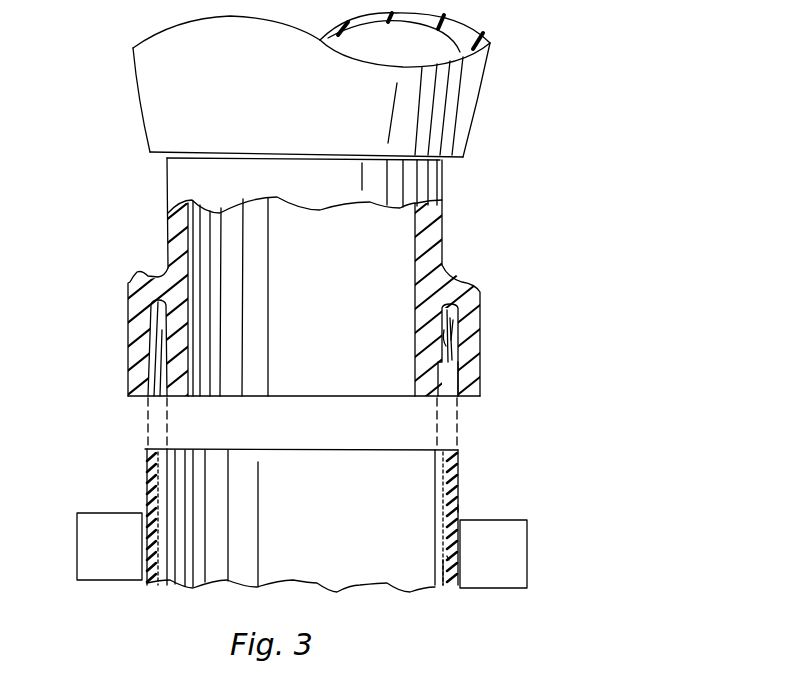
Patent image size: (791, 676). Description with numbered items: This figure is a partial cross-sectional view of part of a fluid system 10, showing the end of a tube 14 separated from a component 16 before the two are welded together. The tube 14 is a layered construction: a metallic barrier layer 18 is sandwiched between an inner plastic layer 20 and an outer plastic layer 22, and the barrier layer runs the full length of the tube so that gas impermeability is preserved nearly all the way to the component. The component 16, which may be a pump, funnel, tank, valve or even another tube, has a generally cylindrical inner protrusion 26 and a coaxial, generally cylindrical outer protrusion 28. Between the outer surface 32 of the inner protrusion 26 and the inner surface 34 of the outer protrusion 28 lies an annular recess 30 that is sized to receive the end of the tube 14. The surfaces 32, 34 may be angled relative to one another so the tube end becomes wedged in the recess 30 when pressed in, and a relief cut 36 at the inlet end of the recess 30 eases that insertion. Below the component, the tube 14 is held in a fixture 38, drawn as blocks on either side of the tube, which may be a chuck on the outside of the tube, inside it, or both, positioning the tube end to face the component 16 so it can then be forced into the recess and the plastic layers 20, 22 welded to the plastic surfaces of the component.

The fluid system 10 is at (632, 128).
The tube 14 is at (468, 487).
The component 16 is at (447, 215).
The metallic barrier layer 18 is at (443, 590).
The inner plastic layer 20 is at (445, 558).
The outer plastic layer 22 is at (458, 510).
The inner protrusion 26 is at (178, 392).
The outer protrusion 28 is at (135, 377).
The annular recess 30 is at (150, 312).
The outer surface 32 is at (440, 340).
The inner surface 34 is at (460, 322).
The relief cut 36 is at (460, 393).
The fixture 38 is at (90, 542).